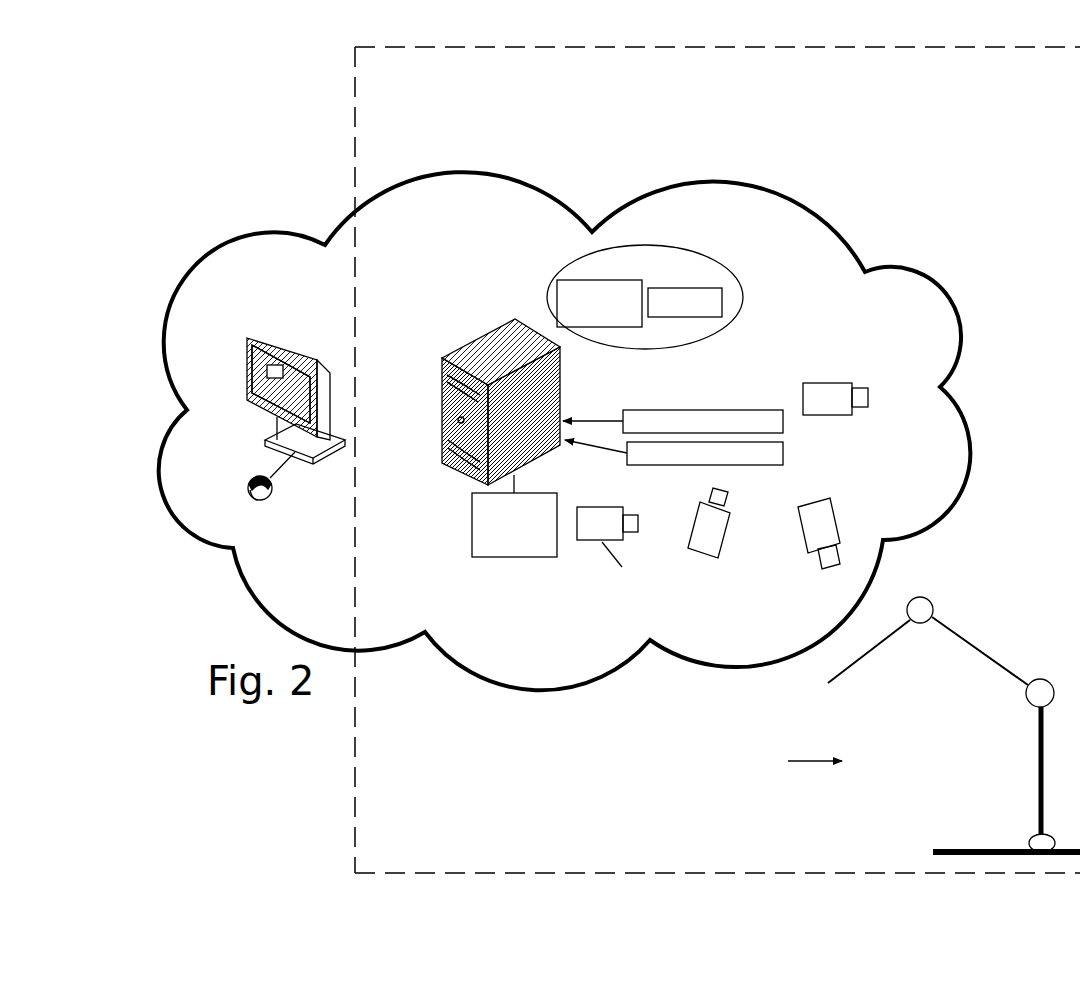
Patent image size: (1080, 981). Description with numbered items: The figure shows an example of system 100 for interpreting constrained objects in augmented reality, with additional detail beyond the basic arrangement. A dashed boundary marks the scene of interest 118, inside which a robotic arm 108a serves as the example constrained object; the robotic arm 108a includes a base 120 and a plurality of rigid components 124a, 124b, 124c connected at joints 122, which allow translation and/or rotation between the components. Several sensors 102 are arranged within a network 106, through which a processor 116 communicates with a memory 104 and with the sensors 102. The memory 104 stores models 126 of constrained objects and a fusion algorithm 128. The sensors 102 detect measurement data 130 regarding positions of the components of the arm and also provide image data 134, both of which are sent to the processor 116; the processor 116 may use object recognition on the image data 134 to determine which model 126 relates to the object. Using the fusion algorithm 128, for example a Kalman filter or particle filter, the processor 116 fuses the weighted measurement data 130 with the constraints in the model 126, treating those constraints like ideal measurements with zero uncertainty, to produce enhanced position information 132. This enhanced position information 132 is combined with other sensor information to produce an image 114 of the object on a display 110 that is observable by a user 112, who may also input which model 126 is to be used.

The system 100 is at (300, 182).
The sensors 102 is at (812, 415).
The memory 104 is at (738, 315).
The network 106 is at (913, 257).
The robotic arm 108a is at (787, 753).
The display 110 is at (247, 382).
The user 112 is at (245, 477).
The image 114 is at (247, 345).
The processor 116 is at (573, 378).
The scene of interest 118 is at (942, 48).
The base 120 is at (958, 847).
The joints 122 is at (918, 625).
The rigid component 124a is at (1037, 773).
The rigid component 124b is at (970, 647).
The rigid component 124c is at (855, 668).
The models 126 is at (682, 288).
The fusion algorithm 128 is at (618, 280).
The measurement data 130 is at (708, 400).
The enhanced position information 132 is at (518, 560).
The image data 134 is at (745, 467).